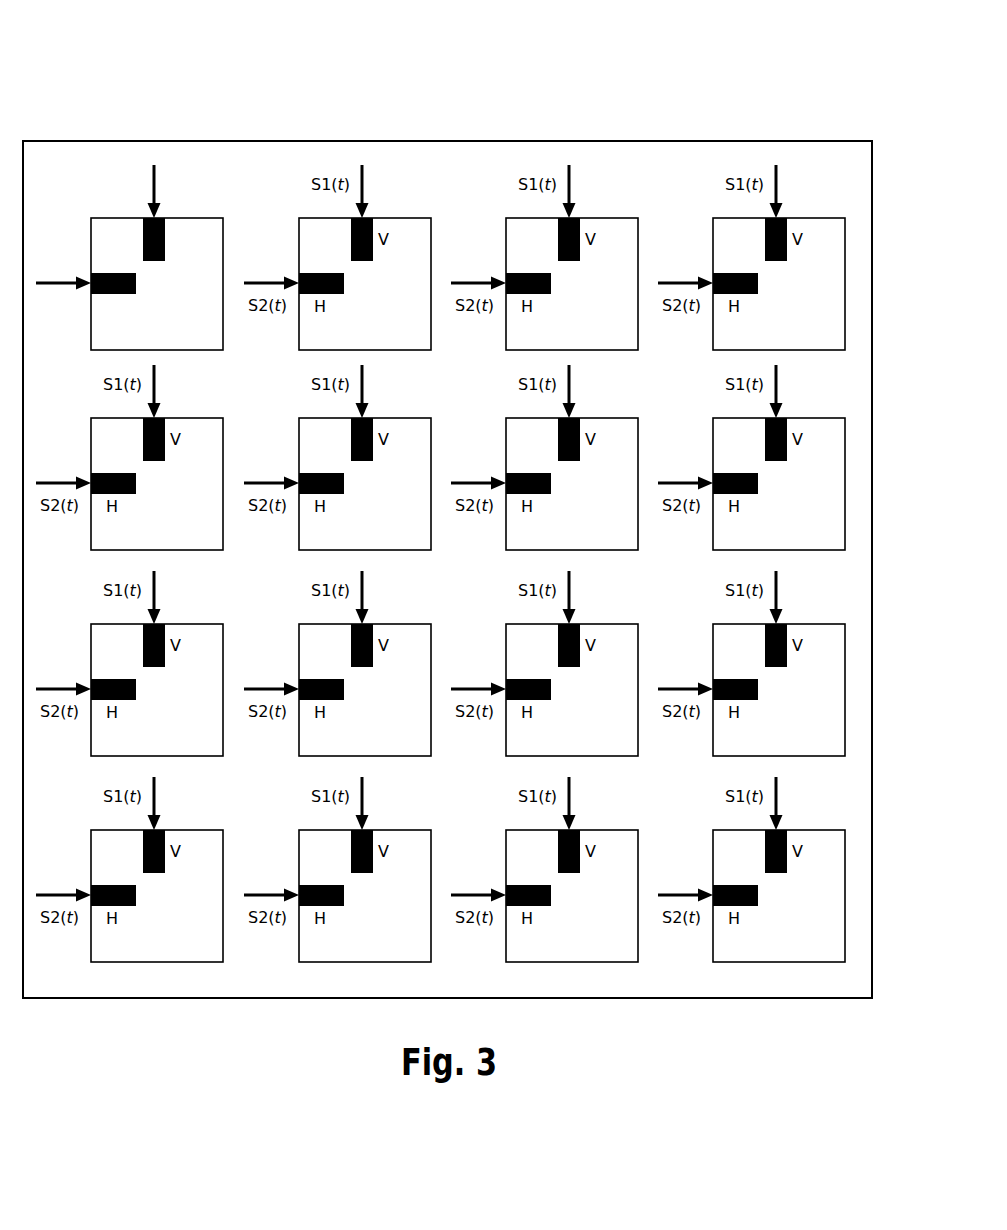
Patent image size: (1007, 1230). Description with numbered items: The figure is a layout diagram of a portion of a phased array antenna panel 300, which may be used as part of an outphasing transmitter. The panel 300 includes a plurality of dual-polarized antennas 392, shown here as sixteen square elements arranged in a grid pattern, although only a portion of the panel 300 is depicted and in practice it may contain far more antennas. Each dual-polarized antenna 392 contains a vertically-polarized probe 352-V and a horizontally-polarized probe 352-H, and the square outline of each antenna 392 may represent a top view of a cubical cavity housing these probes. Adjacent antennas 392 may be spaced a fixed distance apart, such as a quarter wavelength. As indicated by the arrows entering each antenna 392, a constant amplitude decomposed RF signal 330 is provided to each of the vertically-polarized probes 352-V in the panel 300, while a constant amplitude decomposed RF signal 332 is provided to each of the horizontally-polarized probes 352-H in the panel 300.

The phased array antenna panel 300 is at (841, 76).
The constant amplitude decomposed RF signal 330 is at (100, 183).
The constant amplitude decomposed RF signal 332 is at (57, 275).
The dual-polarized antenna 392 is at (202, 217).
The vertically-polarized probe 352-V is at (166, 250).
The horizontally-polarized probe 352-H is at (133, 294).